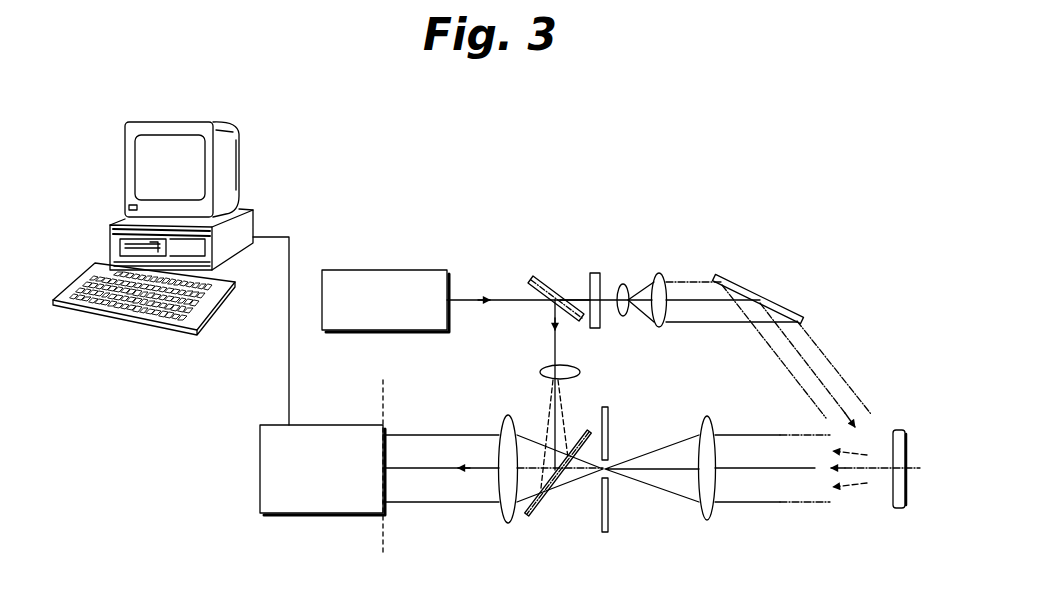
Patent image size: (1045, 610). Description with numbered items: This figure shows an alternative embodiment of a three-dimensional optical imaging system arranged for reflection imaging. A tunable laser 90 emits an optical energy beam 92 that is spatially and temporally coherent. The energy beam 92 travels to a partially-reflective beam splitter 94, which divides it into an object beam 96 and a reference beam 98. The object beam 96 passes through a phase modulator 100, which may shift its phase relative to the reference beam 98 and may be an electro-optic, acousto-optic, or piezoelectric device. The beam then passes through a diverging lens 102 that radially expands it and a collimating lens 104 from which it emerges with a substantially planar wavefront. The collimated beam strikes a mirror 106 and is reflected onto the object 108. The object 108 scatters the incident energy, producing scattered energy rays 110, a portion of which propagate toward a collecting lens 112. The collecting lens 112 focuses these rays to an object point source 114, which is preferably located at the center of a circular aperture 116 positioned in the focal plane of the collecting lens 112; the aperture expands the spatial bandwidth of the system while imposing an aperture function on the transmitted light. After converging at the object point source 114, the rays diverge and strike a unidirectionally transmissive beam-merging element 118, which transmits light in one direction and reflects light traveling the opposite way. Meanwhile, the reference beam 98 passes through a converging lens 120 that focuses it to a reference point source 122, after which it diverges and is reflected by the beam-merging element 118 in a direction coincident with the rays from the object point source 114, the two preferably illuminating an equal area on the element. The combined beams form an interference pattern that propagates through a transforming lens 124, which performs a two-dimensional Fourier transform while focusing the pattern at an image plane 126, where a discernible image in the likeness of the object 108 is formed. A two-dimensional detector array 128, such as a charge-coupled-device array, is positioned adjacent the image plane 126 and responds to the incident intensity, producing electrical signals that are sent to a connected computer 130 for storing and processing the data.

The tunable laser 90 is at (400, 268).
The optical energy beam 92 is at (465, 298).
The partially-reflective beam splitter 94 is at (532, 279).
The object beam 96 is at (573, 302).
The reference beam 98 is at (553, 313).
The phase modulator 100 is at (600, 277).
The diverging lens 102 is at (623, 318).
The collimating lens 104 is at (662, 274).
The mirror 106 is at (800, 312).
The object 108 is at (898, 510).
The scattered energy rays 110 is at (819, 519).
The collecting lens 112 is at (710, 520).
The object point source 114 is at (619, 485).
The circular aperture 116 is at (602, 526).
The beam-merging element 118 is at (530, 513).
The converging lens 120 is at (540, 372).
The reference point source 122 is at (545, 388).
The transforming lens 124 is at (502, 513).
The image plane 126 is at (394, 402).
The detector array 128 is at (260, 477).
The computer 130 is at (153, 330).